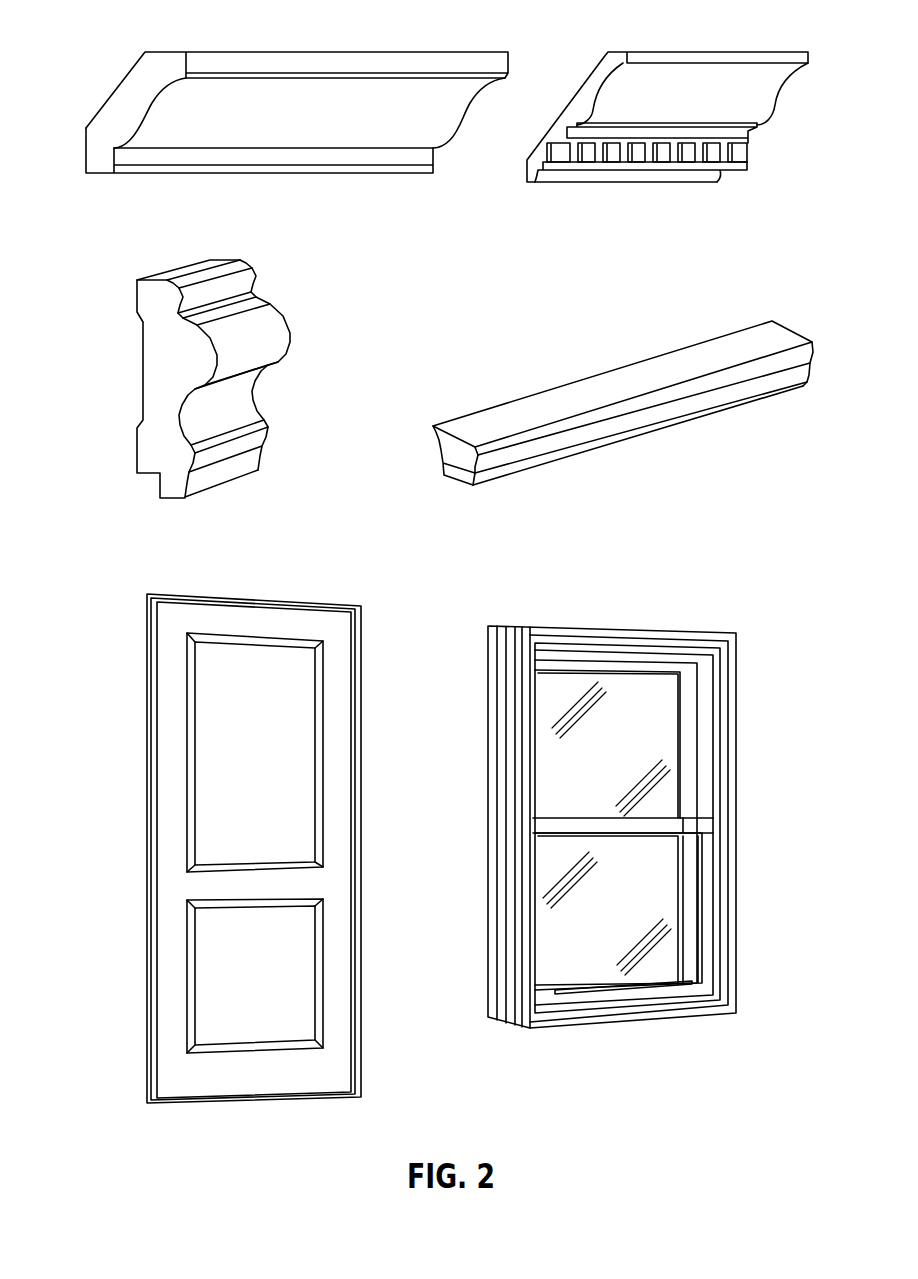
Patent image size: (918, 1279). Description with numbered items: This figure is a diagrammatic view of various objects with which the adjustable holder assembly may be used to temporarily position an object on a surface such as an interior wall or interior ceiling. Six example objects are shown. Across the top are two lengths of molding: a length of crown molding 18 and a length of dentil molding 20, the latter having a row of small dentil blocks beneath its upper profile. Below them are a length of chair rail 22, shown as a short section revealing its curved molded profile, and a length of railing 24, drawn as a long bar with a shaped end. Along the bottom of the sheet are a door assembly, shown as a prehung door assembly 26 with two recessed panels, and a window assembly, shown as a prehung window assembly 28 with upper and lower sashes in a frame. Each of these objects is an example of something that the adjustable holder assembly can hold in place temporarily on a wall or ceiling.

The crown molding 18 is at (120, 97).
The dentil molding 20 is at (623, 77).
The chair rail 22 is at (158, 338).
The railing 24 is at (595, 383).
The prehung door assembly 26 is at (170, 667).
The prehung window assembly 28 is at (502, 653).